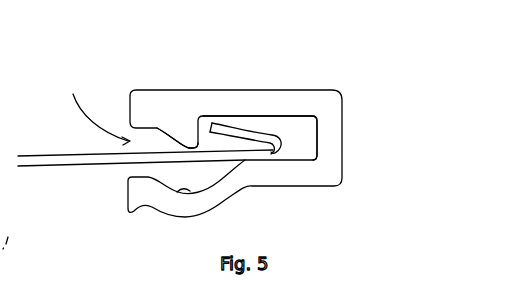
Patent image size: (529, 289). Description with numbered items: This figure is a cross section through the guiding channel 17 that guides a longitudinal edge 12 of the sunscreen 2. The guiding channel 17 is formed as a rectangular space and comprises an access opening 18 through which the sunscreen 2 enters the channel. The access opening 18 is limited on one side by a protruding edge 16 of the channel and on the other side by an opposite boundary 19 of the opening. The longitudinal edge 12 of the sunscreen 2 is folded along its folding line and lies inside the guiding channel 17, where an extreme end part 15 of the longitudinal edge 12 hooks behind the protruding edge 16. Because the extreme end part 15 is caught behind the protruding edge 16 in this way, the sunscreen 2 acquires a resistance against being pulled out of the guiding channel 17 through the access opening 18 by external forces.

The sunscreen 2 is at (54, 164).
The longitudinal edge 12 is at (249, 134).
The extreme end part 15 is at (210, 126).
The protruding edge 16 is at (186, 144).
The guiding channel 17 is at (295, 132).
The access opening 18 is at (97, 110).
The opposite boundary 19 is at (180, 191).